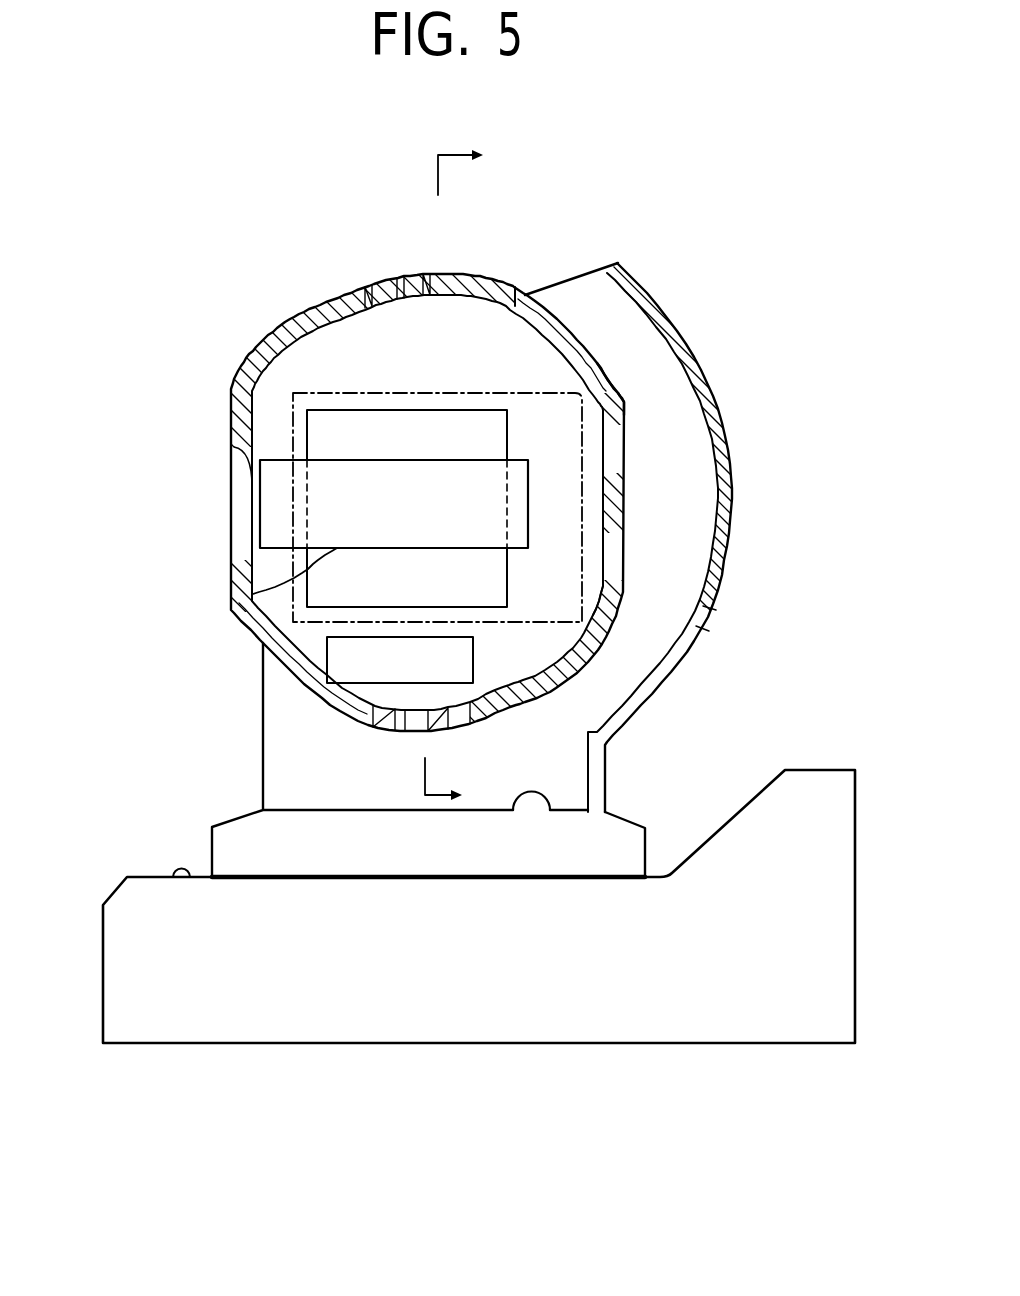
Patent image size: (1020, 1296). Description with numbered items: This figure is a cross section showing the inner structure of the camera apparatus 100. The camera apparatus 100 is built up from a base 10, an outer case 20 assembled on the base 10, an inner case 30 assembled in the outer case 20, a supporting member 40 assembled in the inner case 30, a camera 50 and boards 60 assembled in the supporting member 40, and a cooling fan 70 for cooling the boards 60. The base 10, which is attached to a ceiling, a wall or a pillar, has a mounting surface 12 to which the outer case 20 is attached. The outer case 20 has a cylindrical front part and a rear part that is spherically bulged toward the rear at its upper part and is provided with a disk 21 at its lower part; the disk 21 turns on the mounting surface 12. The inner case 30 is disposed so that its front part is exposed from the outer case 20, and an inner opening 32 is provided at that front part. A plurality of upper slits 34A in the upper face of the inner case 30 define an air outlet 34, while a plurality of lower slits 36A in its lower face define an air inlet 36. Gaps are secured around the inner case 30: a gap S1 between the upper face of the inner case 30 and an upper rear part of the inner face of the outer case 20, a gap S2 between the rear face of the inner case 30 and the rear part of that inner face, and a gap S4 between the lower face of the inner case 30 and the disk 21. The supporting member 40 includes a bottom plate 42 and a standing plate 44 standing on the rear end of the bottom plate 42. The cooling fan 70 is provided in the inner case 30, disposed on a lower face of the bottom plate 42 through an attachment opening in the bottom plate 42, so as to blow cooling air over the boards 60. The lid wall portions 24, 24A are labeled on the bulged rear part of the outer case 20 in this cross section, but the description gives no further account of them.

The camera apparatus 100 is at (613, 155).
The base 10 is at (103, 930).
The mounting surface 12 is at (176, 879).
The outer case 20 is at (647, 296).
The disk 21 is at (550, 812).
The lid wall portion 24 is at (707, 603).
The lid wall portion 24A is at (707, 630).
The inner case 30 is at (280, 325).
The inner opening 32 is at (231, 487).
The air outlet 34 is at (367, 285).
The upper slits 34A is at (400, 279).
The air inlet 36 is at (382, 732).
The lower slits 36A is at (417, 731).
The supporting member 40 is at (554, 624).
The bottom plate 42 is at (310, 622).
The standing plate 44 is at (626, 395).
The camera 50 is at (280, 592).
The boards 60 is at (327, 405).
The cooling fan 70 is at (355, 686).
The gap S1 is at (583, 302).
The gap S2 is at (667, 500).
The gap S4 is at (540, 747).